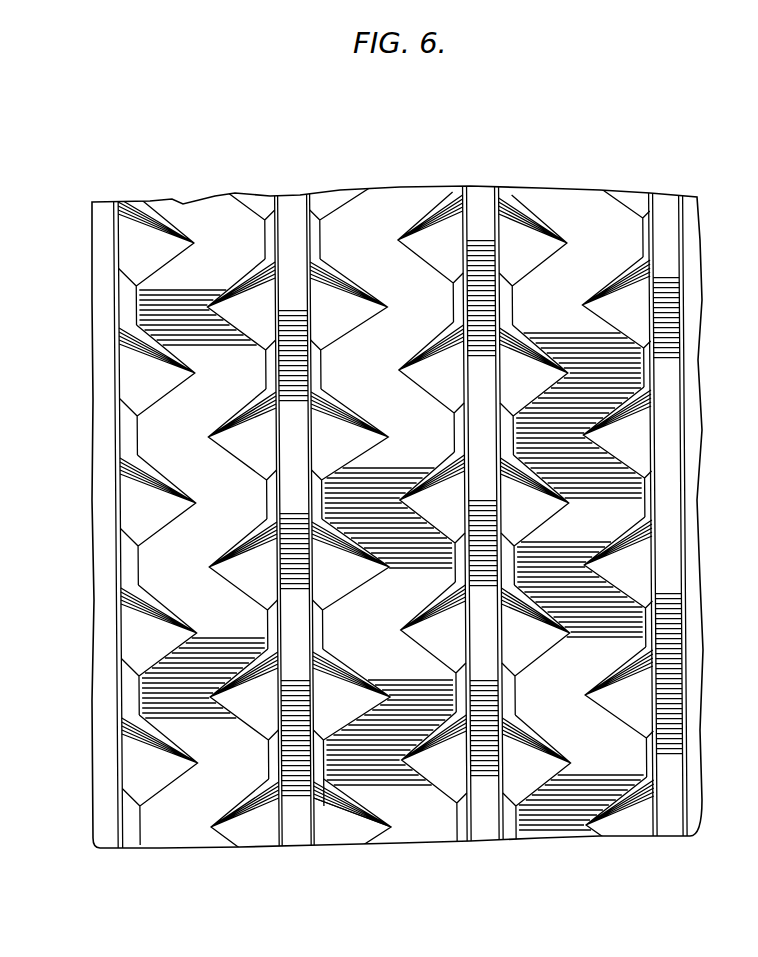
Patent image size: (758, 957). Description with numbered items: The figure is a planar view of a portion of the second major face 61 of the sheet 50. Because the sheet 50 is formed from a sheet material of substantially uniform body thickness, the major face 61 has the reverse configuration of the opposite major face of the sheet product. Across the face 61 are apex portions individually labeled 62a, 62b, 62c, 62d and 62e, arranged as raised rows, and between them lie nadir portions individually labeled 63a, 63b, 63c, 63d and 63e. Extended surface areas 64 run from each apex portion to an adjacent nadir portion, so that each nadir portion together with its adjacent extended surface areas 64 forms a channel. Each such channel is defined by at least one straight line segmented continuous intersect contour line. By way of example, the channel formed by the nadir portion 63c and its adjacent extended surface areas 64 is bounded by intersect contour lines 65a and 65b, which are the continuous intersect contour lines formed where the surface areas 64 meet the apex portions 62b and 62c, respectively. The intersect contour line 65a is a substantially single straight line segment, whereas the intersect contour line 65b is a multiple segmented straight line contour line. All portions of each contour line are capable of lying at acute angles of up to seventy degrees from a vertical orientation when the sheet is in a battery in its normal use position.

The sheet 50 is at (77, 215).
The major face 61 is at (91, 768).
The apex portion 62a is at (155, 852).
The apex portion 62b is at (297, 834).
The apex portion 62c is at (397, 845).
The apex portion 62d is at (485, 832).
The apex portion 62e is at (565, 830).
The nadir portion 63a is at (130, 834).
The nadir portion 63b is at (267, 832).
The nadir portion 63c is at (318, 842).
The nadir portion 63d is at (462, 832).
The nadir portion 63e is at (508, 832).
The extended surface area 64 is at (250, 672).
The intersect contour line 65a is at (327, 813).
The intersect contour line 65b is at (362, 822).